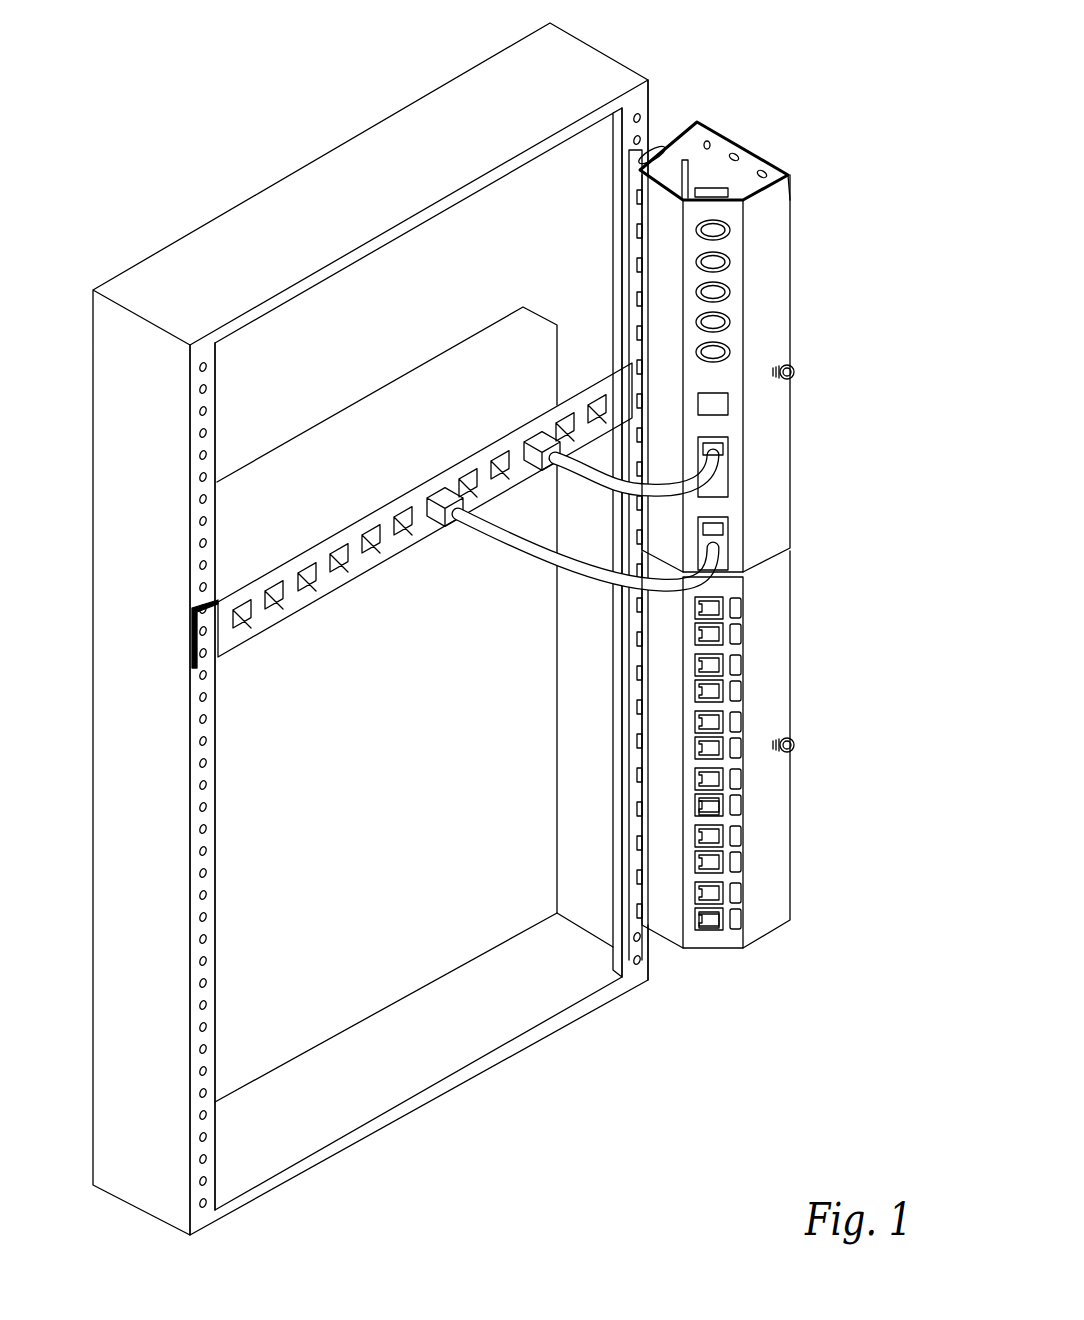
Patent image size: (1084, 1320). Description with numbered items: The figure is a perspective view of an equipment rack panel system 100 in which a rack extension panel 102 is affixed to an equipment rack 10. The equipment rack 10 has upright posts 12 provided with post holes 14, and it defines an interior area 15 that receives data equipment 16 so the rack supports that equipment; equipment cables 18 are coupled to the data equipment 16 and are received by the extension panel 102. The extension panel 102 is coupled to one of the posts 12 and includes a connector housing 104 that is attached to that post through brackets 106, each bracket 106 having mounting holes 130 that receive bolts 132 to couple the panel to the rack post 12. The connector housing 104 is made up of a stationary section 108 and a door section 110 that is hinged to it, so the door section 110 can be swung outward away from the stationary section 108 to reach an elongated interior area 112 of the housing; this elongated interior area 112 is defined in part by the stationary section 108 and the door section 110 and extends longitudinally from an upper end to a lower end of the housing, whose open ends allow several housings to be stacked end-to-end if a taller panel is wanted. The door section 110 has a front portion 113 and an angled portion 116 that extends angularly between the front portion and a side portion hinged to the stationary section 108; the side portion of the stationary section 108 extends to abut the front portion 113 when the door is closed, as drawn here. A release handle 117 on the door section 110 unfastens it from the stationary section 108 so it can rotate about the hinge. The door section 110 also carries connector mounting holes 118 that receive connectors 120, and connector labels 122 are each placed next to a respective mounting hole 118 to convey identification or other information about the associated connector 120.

The equipment rack panel system 100 is at (208, 52).
The equipment rack 10 is at (381, 120).
The posts 12 is at (617, 265).
The post holes 14 is at (639, 113).
The interior area 15 is at (462, 912).
The data equipment 16 is at (360, 417).
The equipment cables 18 is at (593, 491).
The extension panel 102 is at (793, 546).
The connector housing 104 is at (793, 554).
The brackets 106 is at (758, 122).
The stationary section 108 is at (798, 158).
The door section 110 is at (795, 561).
The elongated interior area 112 is at (720, 170).
The front portion 113 is at (768, 307).
The angled portion 116 is at (740, 215).
The release handle 117 is at (800, 372).
The connector mounting holes 118 is at (723, 800).
The connectors 120 is at (712, 807).
The connector labels 122 is at (737, 632).
The mounting holes 130 is at (665, 150).
The bolts 132 is at (635, 165).